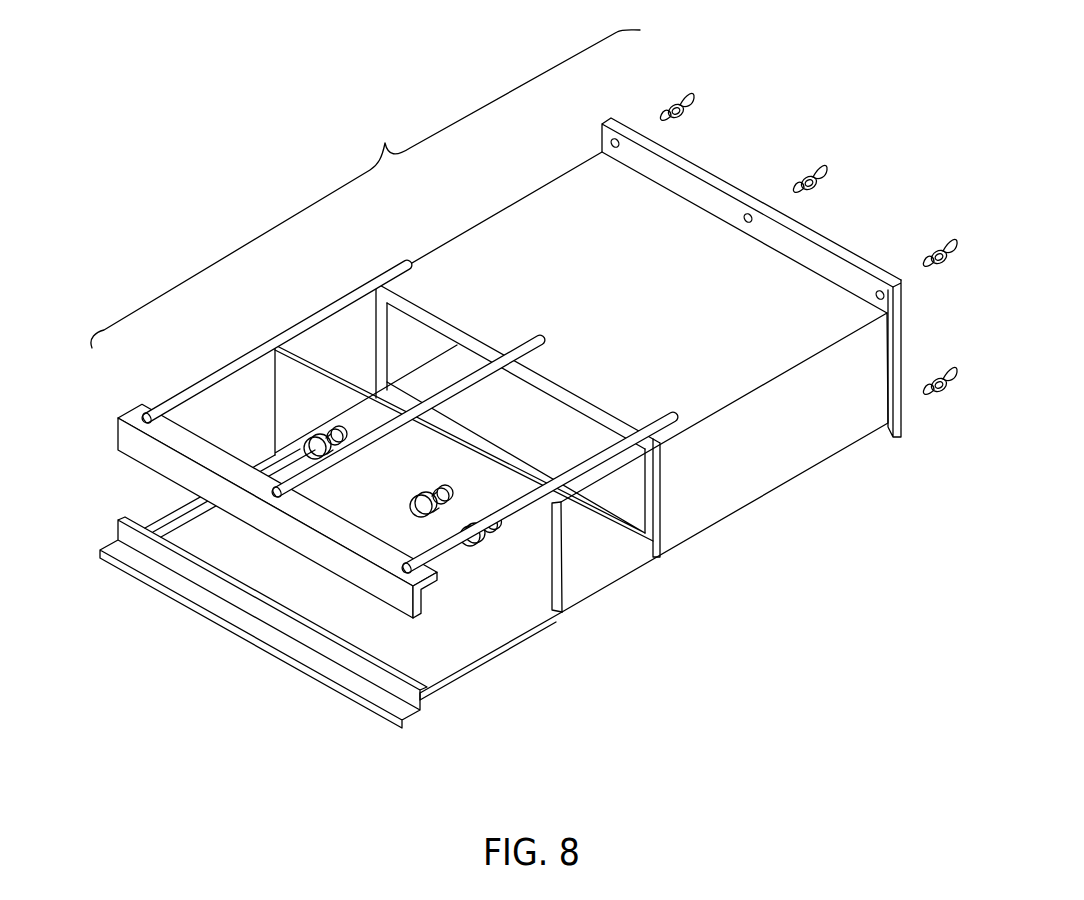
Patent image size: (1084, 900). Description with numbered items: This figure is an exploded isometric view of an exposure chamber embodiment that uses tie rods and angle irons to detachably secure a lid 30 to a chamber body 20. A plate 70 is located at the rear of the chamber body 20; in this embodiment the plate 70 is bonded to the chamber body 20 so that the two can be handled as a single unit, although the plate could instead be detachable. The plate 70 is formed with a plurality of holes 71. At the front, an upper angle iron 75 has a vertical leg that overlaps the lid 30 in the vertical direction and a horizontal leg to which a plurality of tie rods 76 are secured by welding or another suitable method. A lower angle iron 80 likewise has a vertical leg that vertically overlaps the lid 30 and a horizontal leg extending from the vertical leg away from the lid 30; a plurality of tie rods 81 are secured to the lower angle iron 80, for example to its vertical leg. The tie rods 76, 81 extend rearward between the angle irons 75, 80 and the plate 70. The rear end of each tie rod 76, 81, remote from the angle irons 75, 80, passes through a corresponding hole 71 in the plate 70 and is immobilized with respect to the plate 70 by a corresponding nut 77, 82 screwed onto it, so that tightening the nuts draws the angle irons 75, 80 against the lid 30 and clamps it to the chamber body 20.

The chamber body 20 is at (747, 492).
The lid 30 is at (560, 577).
The plate 70 is at (945, 340).
The hole 71 is at (615, 139).
The upper angle iron 75 is at (127, 413).
The tie rod 76 is at (232, 360).
The nut 77 is at (673, 96).
The lower angle iron 80 is at (410, 720).
The tie rod 81 is at (482, 658).
The nut 82 is at (940, 403).